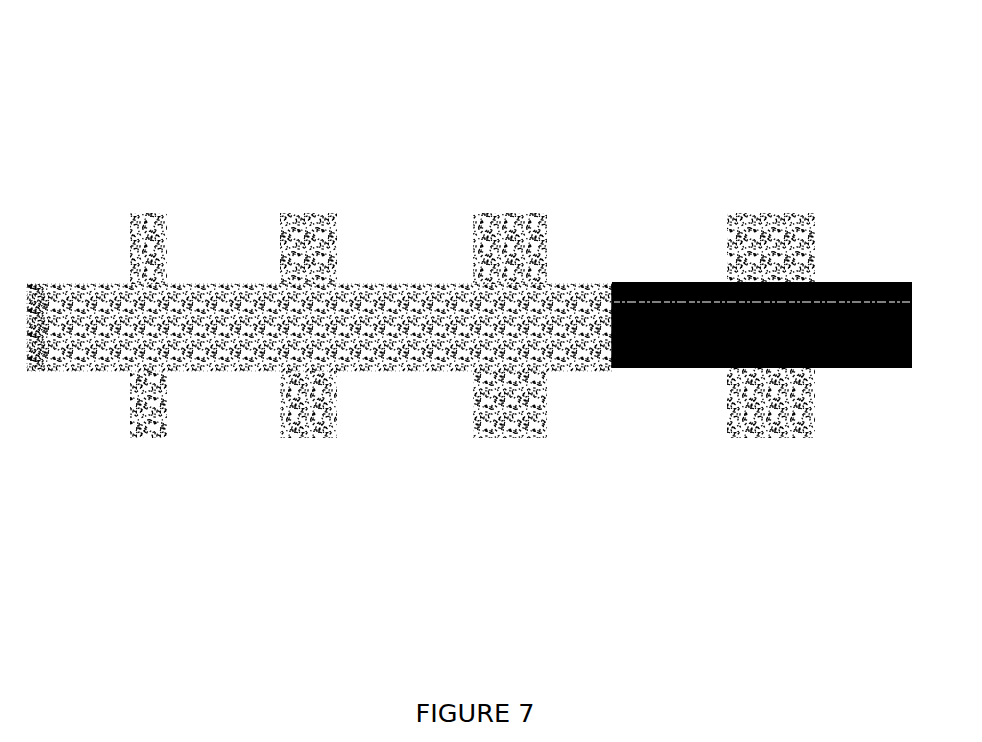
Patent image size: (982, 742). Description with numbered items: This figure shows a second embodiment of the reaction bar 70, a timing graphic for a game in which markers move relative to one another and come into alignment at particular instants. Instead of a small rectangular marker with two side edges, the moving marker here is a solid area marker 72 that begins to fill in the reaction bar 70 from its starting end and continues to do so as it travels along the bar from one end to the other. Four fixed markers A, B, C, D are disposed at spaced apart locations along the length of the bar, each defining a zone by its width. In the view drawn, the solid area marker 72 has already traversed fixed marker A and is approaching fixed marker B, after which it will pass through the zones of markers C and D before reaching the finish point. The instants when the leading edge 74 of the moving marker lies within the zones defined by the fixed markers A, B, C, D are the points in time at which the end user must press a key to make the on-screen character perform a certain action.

The reaction bar 70 is at (469, 269).
The solid area marker 72 is at (710, 366).
The leading edge 74 is at (602, 327).
The fixed marker A is at (779, 193).
The fixed marker B is at (525, 193).
The fixed marker C is at (328, 196).
The fixed marker D is at (165, 196).